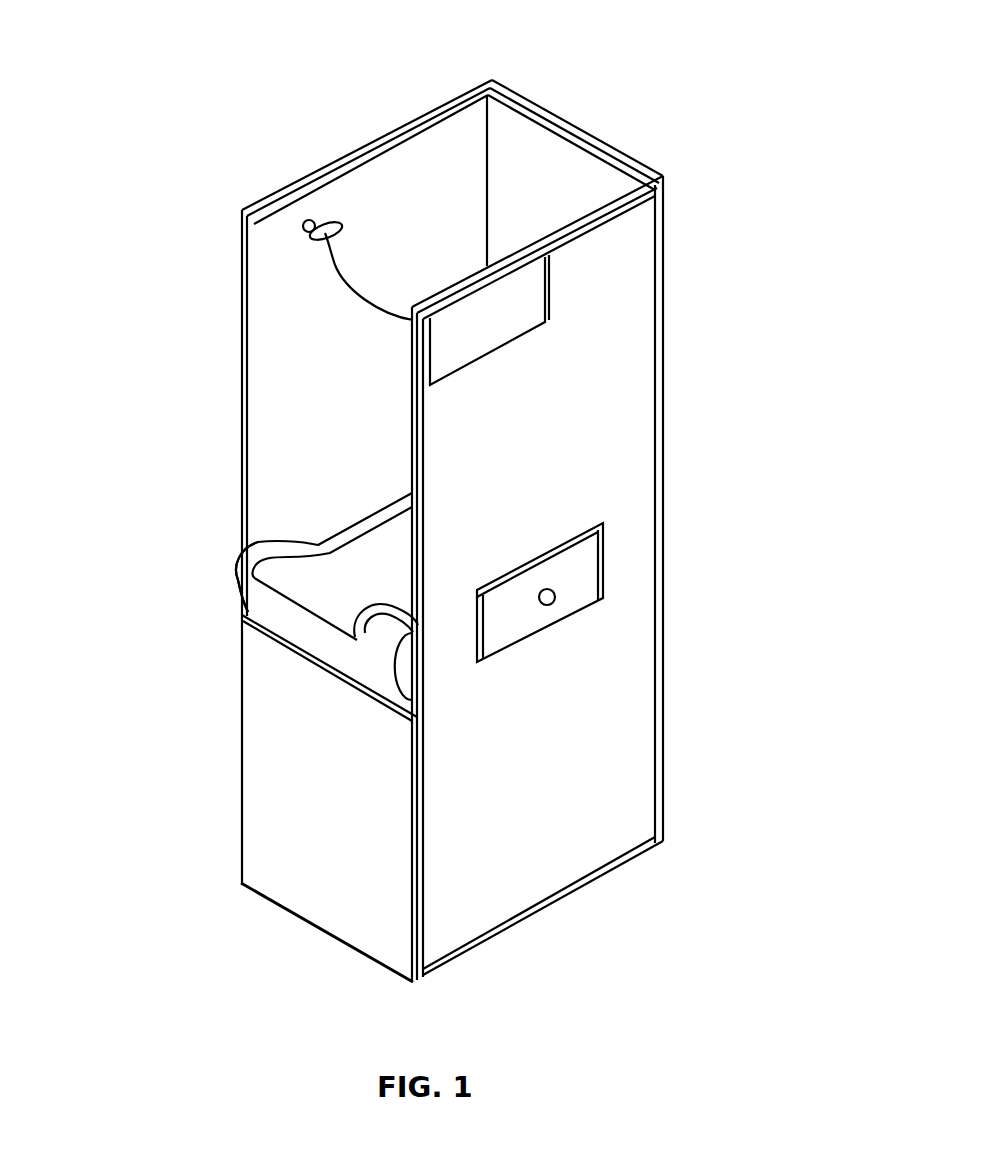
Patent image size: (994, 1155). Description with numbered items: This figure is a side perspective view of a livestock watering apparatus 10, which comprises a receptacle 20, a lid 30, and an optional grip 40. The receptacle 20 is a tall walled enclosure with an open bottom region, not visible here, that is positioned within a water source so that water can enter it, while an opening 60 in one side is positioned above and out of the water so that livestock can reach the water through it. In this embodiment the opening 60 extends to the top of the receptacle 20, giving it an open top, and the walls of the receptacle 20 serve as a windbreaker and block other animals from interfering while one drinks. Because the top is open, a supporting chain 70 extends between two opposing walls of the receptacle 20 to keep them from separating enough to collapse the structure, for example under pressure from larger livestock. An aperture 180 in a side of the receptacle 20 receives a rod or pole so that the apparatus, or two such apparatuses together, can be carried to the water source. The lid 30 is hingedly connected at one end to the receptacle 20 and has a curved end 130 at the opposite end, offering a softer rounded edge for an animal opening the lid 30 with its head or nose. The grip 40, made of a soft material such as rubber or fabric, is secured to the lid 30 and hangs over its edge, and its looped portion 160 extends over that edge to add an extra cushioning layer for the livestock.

The livestock watering apparatus 10 is at (436, 494).
The receptacle 20 is at (664, 330).
The lid 30 is at (234, 580).
The grip 40 is at (305, 607).
The opening 60 is at (288, 407).
The supporting chain 70 is at (373, 317).
The curved end 130 is at (231, 573).
The looped portion 160 is at (278, 570).
The apertures 180 is at (556, 597).